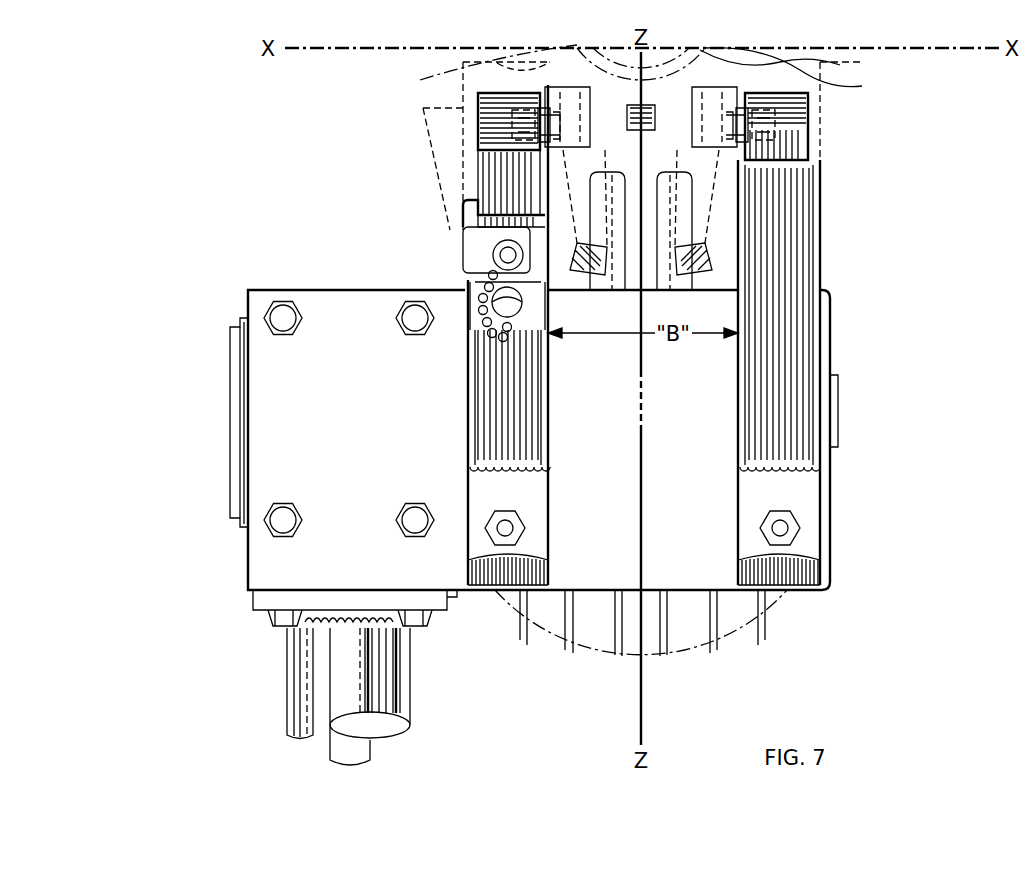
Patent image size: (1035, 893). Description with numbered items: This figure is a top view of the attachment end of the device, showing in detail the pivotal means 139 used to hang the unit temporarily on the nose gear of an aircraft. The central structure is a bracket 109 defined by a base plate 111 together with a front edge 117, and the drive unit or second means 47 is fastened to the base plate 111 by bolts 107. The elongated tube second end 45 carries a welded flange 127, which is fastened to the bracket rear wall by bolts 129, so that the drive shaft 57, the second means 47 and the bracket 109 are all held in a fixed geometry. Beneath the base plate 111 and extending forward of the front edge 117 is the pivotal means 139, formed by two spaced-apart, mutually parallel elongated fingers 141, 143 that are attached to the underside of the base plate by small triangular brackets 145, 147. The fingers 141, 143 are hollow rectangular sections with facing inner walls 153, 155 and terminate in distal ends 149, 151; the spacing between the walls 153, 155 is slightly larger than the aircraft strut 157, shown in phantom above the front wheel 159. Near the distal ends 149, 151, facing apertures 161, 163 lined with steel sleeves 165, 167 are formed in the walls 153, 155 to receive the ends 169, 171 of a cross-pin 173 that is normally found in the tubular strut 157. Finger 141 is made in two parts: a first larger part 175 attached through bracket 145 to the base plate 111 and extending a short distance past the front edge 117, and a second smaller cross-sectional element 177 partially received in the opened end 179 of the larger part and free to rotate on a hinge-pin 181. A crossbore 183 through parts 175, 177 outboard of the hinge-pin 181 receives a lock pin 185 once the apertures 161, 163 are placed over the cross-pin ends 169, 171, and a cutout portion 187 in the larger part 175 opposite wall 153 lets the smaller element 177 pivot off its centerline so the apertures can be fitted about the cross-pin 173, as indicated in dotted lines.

The elongated tube second end 45 is at (308, 733).
The second means 47 is at (213, 496).
The drive shaft 57 is at (388, 753).
The bolts 107 is at (408, 325).
The bracket 109 is at (262, 357).
The base plate 111 is at (275, 395).
The front edge 117 is at (280, 290).
The flange 127 is at (262, 598).
The bolts 129 is at (282, 632).
The pivotal means 139 is at (440, 143).
The elongated finger 141 is at (524, 400).
The elongated finger 143 is at (760, 400).
The triangular bracket 145 is at (548, 350).
The triangular bracket 147 is at (738, 350).
The distal end 149 is at (482, 100).
The distal end 151 is at (790, 98).
The finger wall 153 is at (565, 292).
The finger wall 155 is at (725, 292).
The strut 157 is at (760, 63).
The front wheel 159 is at (745, 625).
The aperture 161 is at (520, 128).
The aperture 163 is at (790, 125).
The steel sleeve 165 is at (545, 127).
The steel sleeve 167 is at (740, 127).
The cross-pin end 169 is at (492, 194).
The cross-pin end 171 is at (762, 140).
The cross-pin 173 is at (641, 197).
The first larger part 175 is at (492, 260).
The second smaller cross-sectional element 177 is at (470, 226).
The opened end 179 is at (466, 240).
The hinge-pin 181 is at (500, 344).
The crossbore 183 is at (482, 312).
The lock pin 185 is at (470, 308).
The cutout portion 187 is at (480, 292).